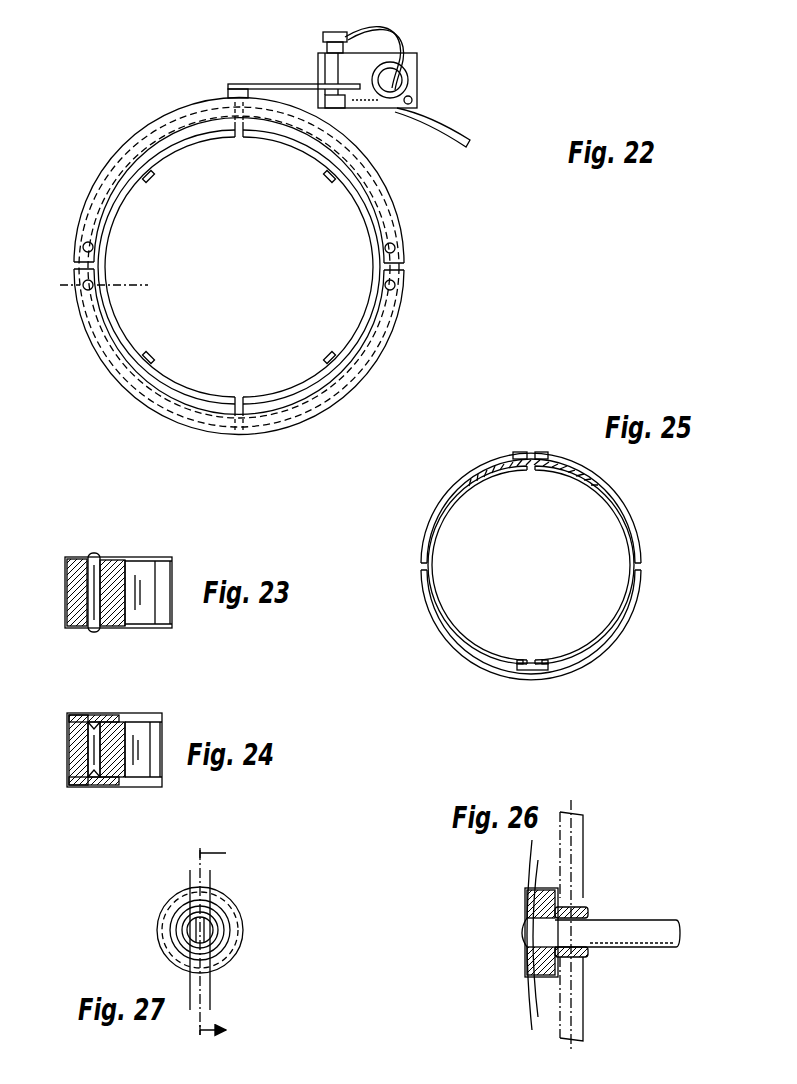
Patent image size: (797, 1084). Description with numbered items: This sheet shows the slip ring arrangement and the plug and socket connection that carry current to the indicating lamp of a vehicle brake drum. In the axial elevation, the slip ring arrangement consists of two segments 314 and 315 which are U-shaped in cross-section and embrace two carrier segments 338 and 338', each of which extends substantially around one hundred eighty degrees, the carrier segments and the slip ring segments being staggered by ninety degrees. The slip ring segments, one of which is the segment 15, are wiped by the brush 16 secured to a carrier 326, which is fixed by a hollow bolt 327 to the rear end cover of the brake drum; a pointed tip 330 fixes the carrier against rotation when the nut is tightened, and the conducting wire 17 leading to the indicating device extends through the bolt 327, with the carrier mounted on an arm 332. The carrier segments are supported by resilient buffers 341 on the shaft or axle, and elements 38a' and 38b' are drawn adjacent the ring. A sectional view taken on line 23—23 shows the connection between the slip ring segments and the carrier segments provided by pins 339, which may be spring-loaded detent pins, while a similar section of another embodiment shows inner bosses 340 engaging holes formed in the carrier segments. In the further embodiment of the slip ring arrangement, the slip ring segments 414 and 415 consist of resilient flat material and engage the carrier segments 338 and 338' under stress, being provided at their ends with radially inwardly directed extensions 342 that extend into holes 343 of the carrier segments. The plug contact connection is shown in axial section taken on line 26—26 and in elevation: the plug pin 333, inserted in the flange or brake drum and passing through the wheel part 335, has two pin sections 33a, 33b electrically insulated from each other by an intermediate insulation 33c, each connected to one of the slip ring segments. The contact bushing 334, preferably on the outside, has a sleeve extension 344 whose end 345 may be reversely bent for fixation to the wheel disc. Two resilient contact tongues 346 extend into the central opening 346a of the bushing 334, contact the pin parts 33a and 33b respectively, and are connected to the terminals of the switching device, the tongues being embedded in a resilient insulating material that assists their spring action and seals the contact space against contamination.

In FIG. 22, the slip ring segment 314 is at (381, 200).
In FIG. 22, the slip ring segment 315 is at (393, 303).
In FIG. 25, the carrier segment 338 is at (549, 565).
In FIG. 22, the carrier segment 338' is at (239, 267).
In FIG. 25, the carrier segment 338' is at (477, 565).
In FIG. 22, the pin 339 is at (95, 284).
In FIG. 23, the pin 339 is at (90, 618).
In FIG. 22, the resilient buffer 341 is at (156, 172).
In FIG. 22, the holding lug 38a' is at (327, 201).
In FIG. 23, the holder block 38b' is at (140, 565).
In FIG. 24, the holder block 38b' is at (131, 728).
In FIG. 22, the section line 23— 23 is at (105, 289).
In FIG. 22, the brush 16 is at (228, 91).
In FIG. 22, the bracket arm 332 is at (272, 83).
In FIG. 22, the carrier 326 is at (414, 72).
In FIG. 22, the hollow bolt 327 is at (402, 72).
In FIG. 22, the pointed tip 330 is at (416, 99).
In FIG. 22, the cable 17 is at (445, 135).
In FIG. 23, the slip ring segment 15 is at (76, 557).
In FIG. 24, the slip ring segment 15 is at (71, 786).
In FIG. 24, the inner boss 340 is at (94, 716).
In FIG. 25, the radially inwardly directed extension 342 is at (540, 450).
In FIG. 25, the hole 343 is at (540, 467).
In FIG. 25, the slip ring segment 414 is at (476, 661).
In FIG. 25, the slip ring segment 415 is at (623, 506).
In FIG. 26, the plate 335 is at (585, 836).
In FIG. 26, the sleeve extension 344 is at (570, 905).
In FIG. 26, the end of sleeve extension 345 is at (590, 958).
In FIG. 26, the pin part 33b is at (655, 925).
In FIG. 27, the pin part 33b is at (186, 938).
In FIG. 26, the resilient contact tongue 346 is at (557, 936).
In FIG. 27, the resilient contact tongue 346 is at (178, 924).
In FIG. 27, the sleeve bore 346a is at (218, 924).
In FIG. 26, the contact pin 333 is at (690, 957).
In FIG. 26, the contact bushing 334 is at (522, 974).
In FIG. 27, the contact bushing 334 is at (238, 975).
In FIG. 27, the pin section 33a is at (214, 938).
In FIG. 27, the intermediate insulation 33c is at (195, 915).
In FIG. 27, the section line 26— 26 is at (229, 942).